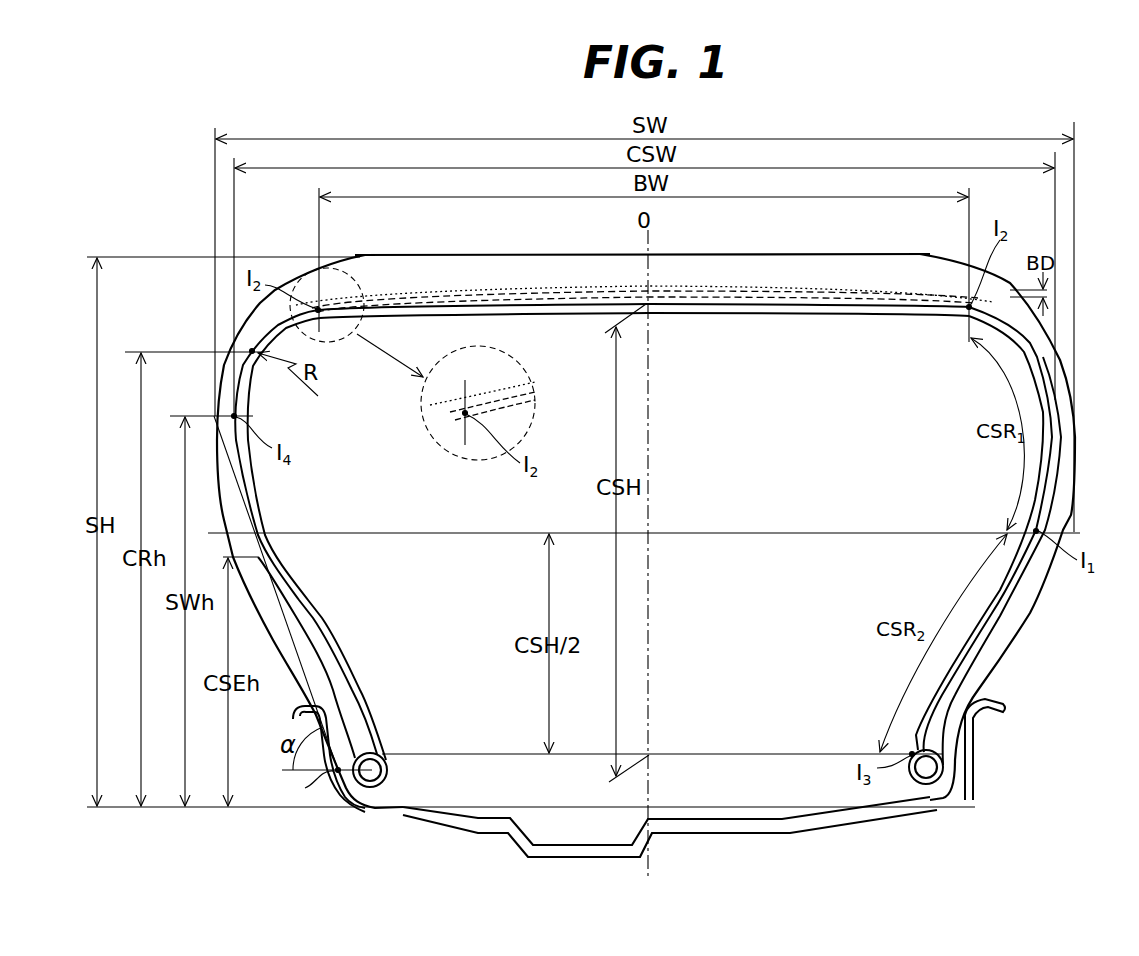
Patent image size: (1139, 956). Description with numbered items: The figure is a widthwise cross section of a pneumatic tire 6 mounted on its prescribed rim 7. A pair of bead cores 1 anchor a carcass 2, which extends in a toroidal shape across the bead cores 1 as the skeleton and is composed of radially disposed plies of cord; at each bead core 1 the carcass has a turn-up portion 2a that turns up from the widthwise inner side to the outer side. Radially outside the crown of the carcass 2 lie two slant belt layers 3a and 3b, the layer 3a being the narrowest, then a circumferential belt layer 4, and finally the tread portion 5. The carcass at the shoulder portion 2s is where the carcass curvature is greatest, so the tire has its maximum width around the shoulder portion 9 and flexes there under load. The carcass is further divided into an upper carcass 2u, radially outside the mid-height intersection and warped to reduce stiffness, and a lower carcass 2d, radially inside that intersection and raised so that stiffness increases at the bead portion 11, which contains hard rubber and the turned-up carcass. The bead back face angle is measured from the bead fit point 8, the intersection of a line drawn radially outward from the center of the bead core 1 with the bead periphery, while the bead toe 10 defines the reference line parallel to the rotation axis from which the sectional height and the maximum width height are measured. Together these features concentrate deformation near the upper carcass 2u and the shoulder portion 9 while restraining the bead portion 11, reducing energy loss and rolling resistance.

The bead core 1 is at (350, 810).
The carcass 2 is at (653, 515).
The turn-up portion 2a is at (300, 640).
The carcass at the shoulder portion 2s is at (257, 345).
The upper carcass 2u is at (1050, 362).
The lower carcass 2d is at (992, 610).
The slant belt layer 3a is at (517, 388).
The slant belt layer 3b is at (520, 400).
The circumferential belt layer 4 is at (837, 287).
The tread portion 5 is at (497, 254).
The pneumatic tire 6 is at (203, 330).
The prescribed rim 7 is at (972, 735).
The bead fit point 8 is at (311, 785).
The shoulder portion 9 is at (1063, 340).
The bead toe 10 is at (405, 806).
The bead portion 11 is at (1045, 588).